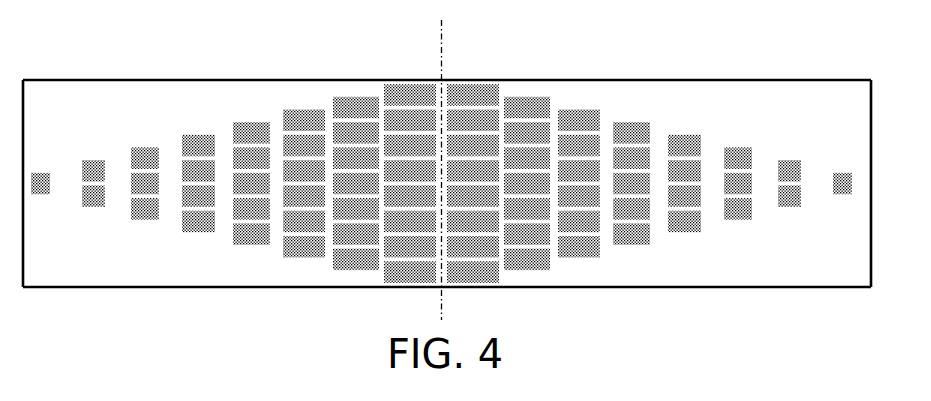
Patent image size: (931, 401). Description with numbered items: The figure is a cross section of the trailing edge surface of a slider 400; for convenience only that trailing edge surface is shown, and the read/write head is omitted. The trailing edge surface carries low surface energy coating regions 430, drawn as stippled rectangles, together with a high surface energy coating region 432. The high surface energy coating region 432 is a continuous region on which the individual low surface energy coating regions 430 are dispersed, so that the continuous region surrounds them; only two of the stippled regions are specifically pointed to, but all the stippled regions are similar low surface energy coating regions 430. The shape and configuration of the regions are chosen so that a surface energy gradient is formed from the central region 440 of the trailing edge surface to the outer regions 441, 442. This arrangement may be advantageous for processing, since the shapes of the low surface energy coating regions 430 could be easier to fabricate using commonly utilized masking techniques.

The slider 400 is at (192, 52).
The low surface energy coating regions 430 is at (407, 85).
The high surface energy coating region 432 is at (125, 247).
The central region 440 is at (442, 50).
The outer region 441 is at (43, 62).
The outer region 442 is at (832, 56).